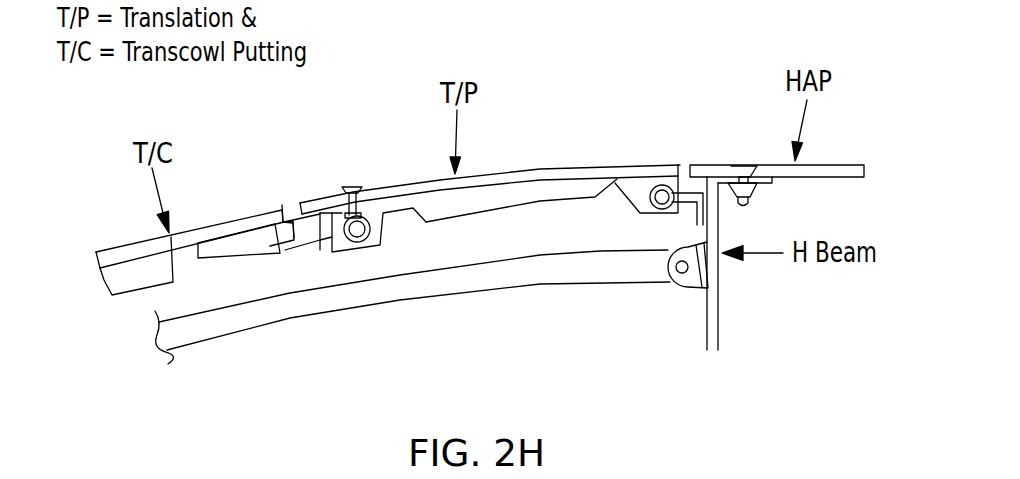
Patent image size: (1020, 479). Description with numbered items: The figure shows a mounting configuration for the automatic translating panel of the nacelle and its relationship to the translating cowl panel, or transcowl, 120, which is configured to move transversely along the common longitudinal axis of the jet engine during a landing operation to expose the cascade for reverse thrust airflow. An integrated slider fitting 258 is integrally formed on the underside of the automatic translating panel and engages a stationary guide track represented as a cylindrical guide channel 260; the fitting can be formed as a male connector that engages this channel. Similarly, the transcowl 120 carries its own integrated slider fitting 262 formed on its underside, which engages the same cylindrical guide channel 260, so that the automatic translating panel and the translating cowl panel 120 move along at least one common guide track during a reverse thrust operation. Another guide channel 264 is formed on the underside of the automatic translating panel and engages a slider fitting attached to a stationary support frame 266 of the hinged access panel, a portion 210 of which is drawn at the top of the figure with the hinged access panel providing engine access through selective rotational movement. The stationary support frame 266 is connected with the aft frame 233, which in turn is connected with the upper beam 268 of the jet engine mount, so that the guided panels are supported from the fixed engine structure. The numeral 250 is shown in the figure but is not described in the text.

The translating cowl panel 120 is at (128, 248).
The hinged access panel portion 210 is at (842, 165).
The aft frame 233 is at (280, 322).
The cowl panel 250 is at (388, 236).
The slider fitting 258 is at (345, 190).
The cylindrical guide channel 260 is at (364, 219).
The integrated slider fitting 262 is at (266, 171).
The guide channel 264 is at (650, 185).
The stationary support frame 266 is at (693, 180).
The upper beam 268 is at (720, 266).